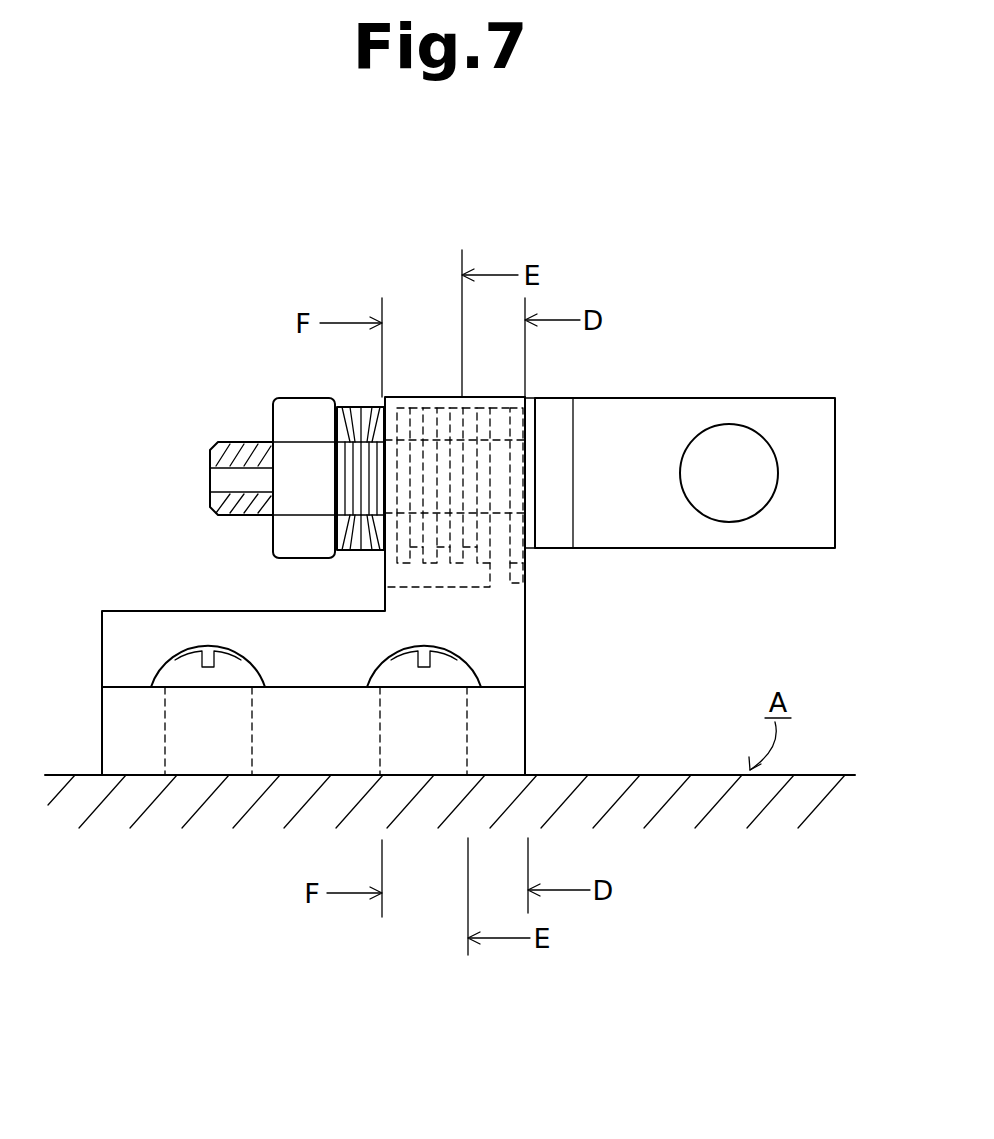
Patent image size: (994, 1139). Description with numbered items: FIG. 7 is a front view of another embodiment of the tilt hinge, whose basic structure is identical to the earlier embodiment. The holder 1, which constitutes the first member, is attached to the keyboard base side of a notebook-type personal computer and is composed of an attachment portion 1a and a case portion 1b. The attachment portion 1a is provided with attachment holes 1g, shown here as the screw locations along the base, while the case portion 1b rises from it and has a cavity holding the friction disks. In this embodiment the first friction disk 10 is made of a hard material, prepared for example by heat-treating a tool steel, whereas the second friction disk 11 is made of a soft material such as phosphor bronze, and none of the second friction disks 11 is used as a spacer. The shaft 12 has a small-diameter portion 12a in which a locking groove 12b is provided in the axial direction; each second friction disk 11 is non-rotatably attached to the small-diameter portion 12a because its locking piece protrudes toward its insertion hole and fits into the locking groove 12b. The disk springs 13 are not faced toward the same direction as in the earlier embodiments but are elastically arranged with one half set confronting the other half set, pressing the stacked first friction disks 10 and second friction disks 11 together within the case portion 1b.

The holder 1 is at (548, 642).
The attachment portion 1a is at (118, 712).
The case portion 1b is at (392, 578).
The attachment hole 1g is at (165, 742).
The first friction disk 10 is at (432, 395).
The second friction disk 11 is at (392, 392).
The shaft 12 is at (698, 372).
The small-diameter portion 12a is at (233, 442).
The locking groove 12b is at (226, 478).
The disk spring 13 is at (374, 405).